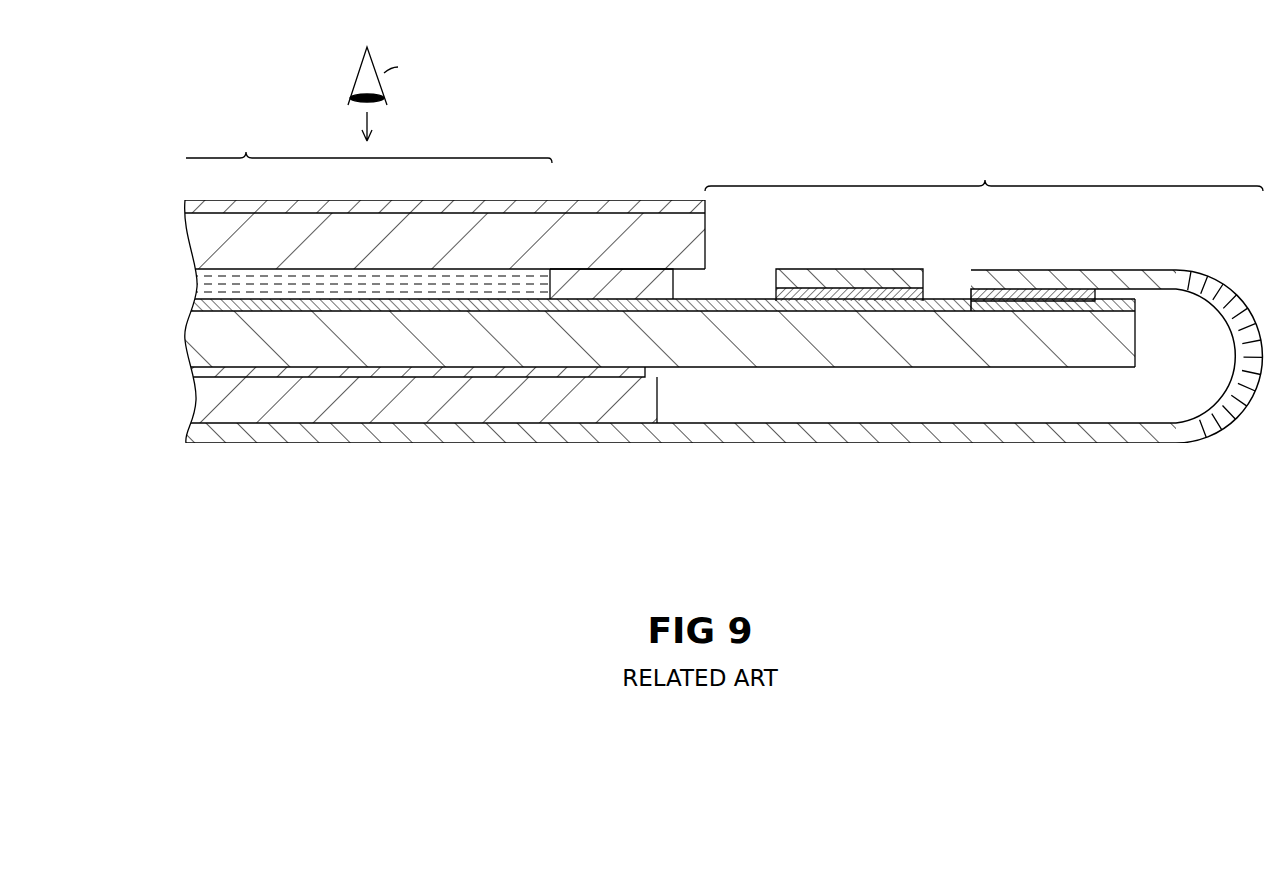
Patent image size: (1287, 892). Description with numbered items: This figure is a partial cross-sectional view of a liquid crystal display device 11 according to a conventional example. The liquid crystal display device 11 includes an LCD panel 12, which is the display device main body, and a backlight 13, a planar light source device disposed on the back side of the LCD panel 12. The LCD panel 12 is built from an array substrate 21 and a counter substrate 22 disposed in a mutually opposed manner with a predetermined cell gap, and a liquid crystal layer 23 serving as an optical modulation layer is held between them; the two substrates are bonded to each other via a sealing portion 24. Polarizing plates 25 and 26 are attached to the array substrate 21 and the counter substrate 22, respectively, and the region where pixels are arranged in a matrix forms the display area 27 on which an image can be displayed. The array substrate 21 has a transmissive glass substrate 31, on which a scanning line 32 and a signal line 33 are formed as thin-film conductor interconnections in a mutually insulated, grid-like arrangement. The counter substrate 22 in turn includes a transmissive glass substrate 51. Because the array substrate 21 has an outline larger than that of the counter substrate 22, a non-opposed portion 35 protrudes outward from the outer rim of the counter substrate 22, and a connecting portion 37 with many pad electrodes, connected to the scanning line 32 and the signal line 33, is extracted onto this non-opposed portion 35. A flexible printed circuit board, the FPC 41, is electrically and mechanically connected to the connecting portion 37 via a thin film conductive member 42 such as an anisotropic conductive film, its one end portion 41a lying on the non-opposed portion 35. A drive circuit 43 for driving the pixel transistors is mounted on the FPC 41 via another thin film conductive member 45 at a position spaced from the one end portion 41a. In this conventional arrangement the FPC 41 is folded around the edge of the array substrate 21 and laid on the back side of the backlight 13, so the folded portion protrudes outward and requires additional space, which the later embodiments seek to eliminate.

The liquid crystal display device 11 is at (689, 141).
The LCD panel 12 is at (171, 202).
The backlight 13 is at (171, 380).
The array substrate 21 is at (432, 355).
The counter substrate 22 is at (575, 230).
The liquid crystal layer 23 is at (297, 287).
The sealing portion 24 is at (650, 285).
The polarizing plate 25 is at (520, 370).
The polarizing plate 26 is at (663, 207).
The display area 27 is at (369, 146).
The glass substrate 31 is at (470, 355).
The scanning line 32 is at (488, 300).
The signal line 33 is at (660, 305).
The non-opposed portion 35 is at (951, 306).
The connecting portion 37 is at (1025, 306).
The flexible printed circuit board 41 is at (1135, 277).
The one end portion 41a is at (1012, 277).
The thin film conductive member 42 is at (1066, 297).
The drive circuit 43 is at (820, 276).
The thin film conductive member 45 is at (872, 295).
The glass substrate 51 is at (617, 230).